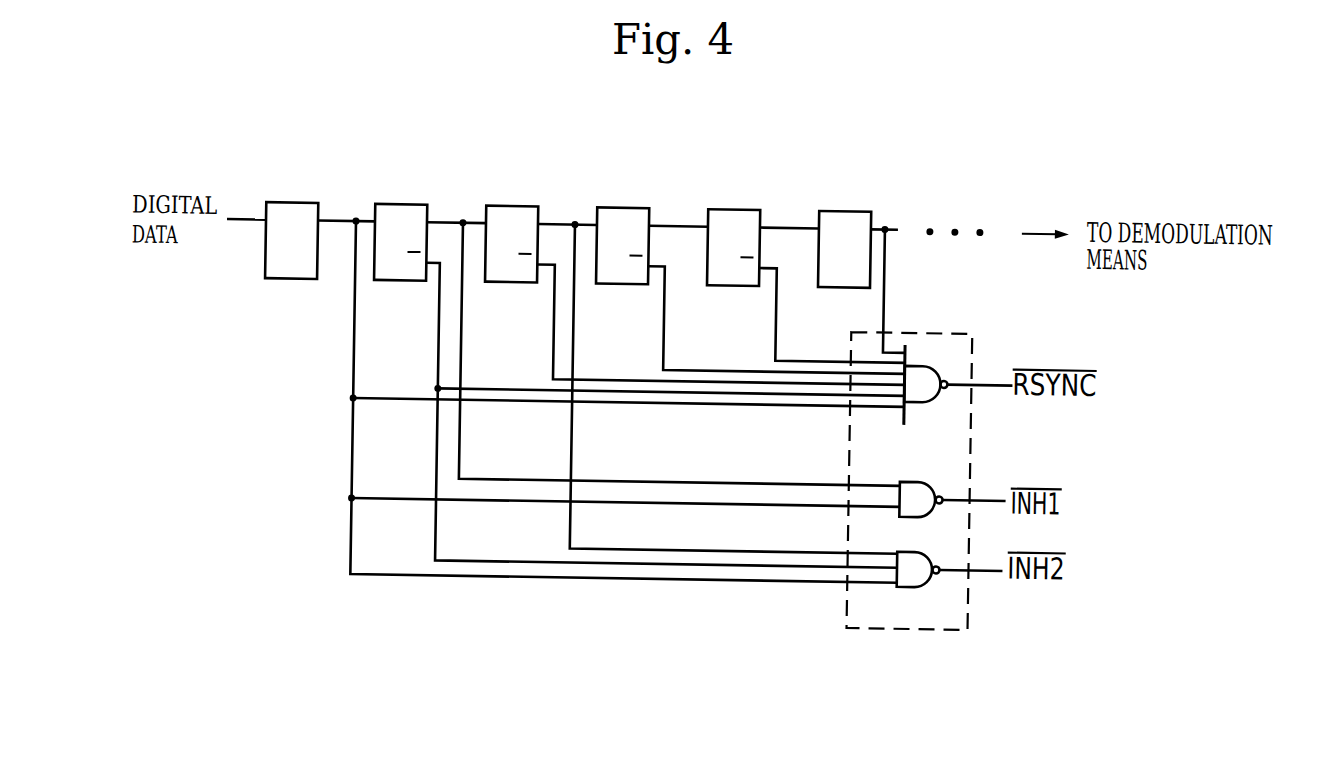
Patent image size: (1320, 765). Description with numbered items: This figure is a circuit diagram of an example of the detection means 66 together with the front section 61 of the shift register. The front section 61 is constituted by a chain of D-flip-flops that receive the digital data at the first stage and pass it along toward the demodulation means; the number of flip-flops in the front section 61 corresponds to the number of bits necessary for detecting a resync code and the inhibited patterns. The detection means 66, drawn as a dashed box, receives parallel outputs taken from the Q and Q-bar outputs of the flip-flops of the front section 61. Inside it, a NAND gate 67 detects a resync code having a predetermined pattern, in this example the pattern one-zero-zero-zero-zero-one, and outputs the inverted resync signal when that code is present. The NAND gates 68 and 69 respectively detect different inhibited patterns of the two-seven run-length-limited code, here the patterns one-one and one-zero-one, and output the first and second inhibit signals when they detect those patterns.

The front section of the shift register 61 is at (877, 170).
The detection means 66 is at (874, 620).
The NAND gate 67 is at (927, 354).
The NAND gate 68 is at (922, 471).
The NAND gate 69 is at (923, 577).